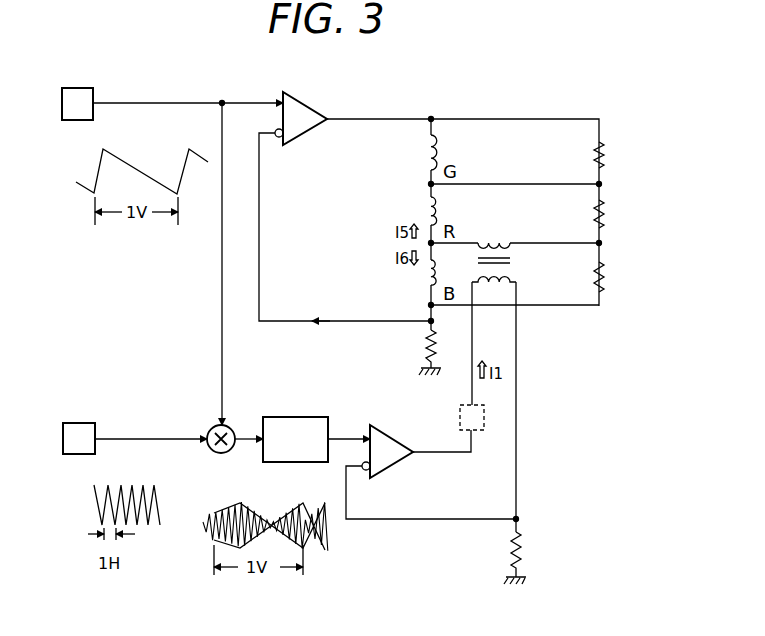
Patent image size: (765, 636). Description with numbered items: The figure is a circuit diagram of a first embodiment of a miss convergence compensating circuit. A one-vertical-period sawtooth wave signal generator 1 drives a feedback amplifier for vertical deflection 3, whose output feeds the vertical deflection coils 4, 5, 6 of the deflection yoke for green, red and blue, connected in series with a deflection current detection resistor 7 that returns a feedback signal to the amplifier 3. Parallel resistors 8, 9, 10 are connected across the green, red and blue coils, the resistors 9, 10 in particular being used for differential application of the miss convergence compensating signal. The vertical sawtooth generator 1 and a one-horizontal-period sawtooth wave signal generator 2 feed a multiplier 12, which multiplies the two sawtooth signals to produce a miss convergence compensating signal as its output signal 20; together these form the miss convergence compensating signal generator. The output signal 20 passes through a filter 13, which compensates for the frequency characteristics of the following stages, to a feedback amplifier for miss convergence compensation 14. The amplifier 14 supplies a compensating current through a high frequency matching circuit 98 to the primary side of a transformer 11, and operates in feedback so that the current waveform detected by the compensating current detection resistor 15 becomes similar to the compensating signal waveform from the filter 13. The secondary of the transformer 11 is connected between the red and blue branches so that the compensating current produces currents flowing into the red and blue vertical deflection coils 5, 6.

The 1V sawtooth wave signal generator 1 is at (78, 88).
The 1H sawtooth wave signal generator 2 is at (79, 423).
The feedback amplifier for vertical deflection 3 is at (307, 103).
The vertical deflection coil for green 4 is at (427, 154).
The vertical deflection coil for red 5 is at (427, 206).
The vertical deflection coil for blue 6 is at (427, 278).
The deflection current detection resistor 7 is at (427, 348).
The parallel resistor of DY for green 8 is at (604, 156).
The parallel resistor of DY for red 9 is at (604, 216).
The parallel resistor of DY for blue 10 is at (604, 274).
The transformer 11 is at (494, 240).
The multiplier 12 is at (212, 428).
The filter 13 is at (298, 417).
The feedback amplifier for miss convergence compensation 14 is at (397, 466).
The compensating current detection resistor 15 is at (521, 546).
The output signal of the multiplier 20 is at (242, 433).
The high frequency matching circuit 98 is at (458, 416).